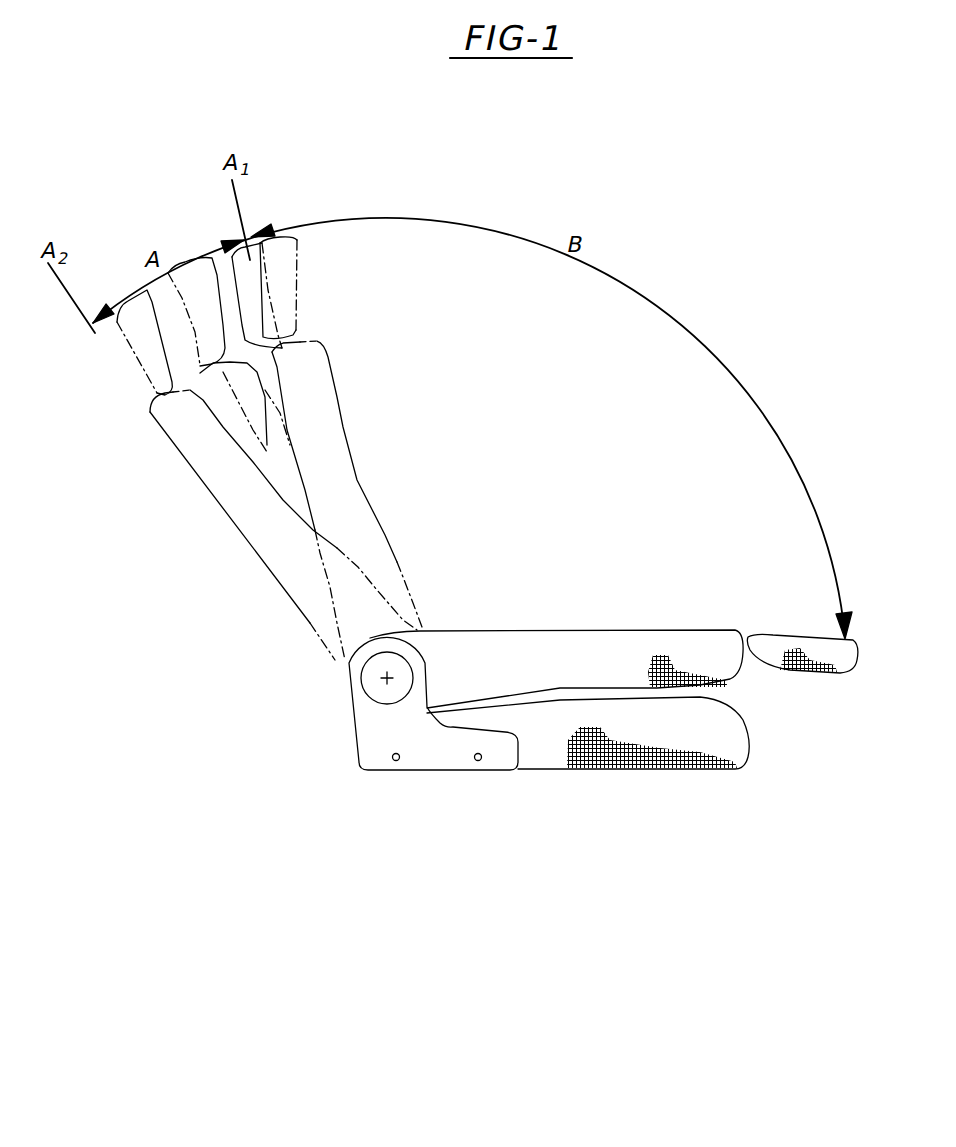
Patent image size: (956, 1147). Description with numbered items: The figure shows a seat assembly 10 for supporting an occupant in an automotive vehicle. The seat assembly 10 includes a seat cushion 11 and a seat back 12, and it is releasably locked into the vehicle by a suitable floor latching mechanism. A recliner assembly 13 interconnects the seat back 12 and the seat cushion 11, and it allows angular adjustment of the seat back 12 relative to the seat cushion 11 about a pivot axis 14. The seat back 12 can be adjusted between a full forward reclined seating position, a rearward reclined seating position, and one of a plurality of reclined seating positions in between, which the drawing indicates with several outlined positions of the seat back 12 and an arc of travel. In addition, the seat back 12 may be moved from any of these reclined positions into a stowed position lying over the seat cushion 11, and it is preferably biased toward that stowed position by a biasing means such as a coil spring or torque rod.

The seat assembly 10 is at (352, 795).
The seat cushion 11 is at (733, 763).
The seat back 12 is at (328, 375).
The recliner assembly 13 is at (366, 680).
The pivot axis 14 is at (388, 684).